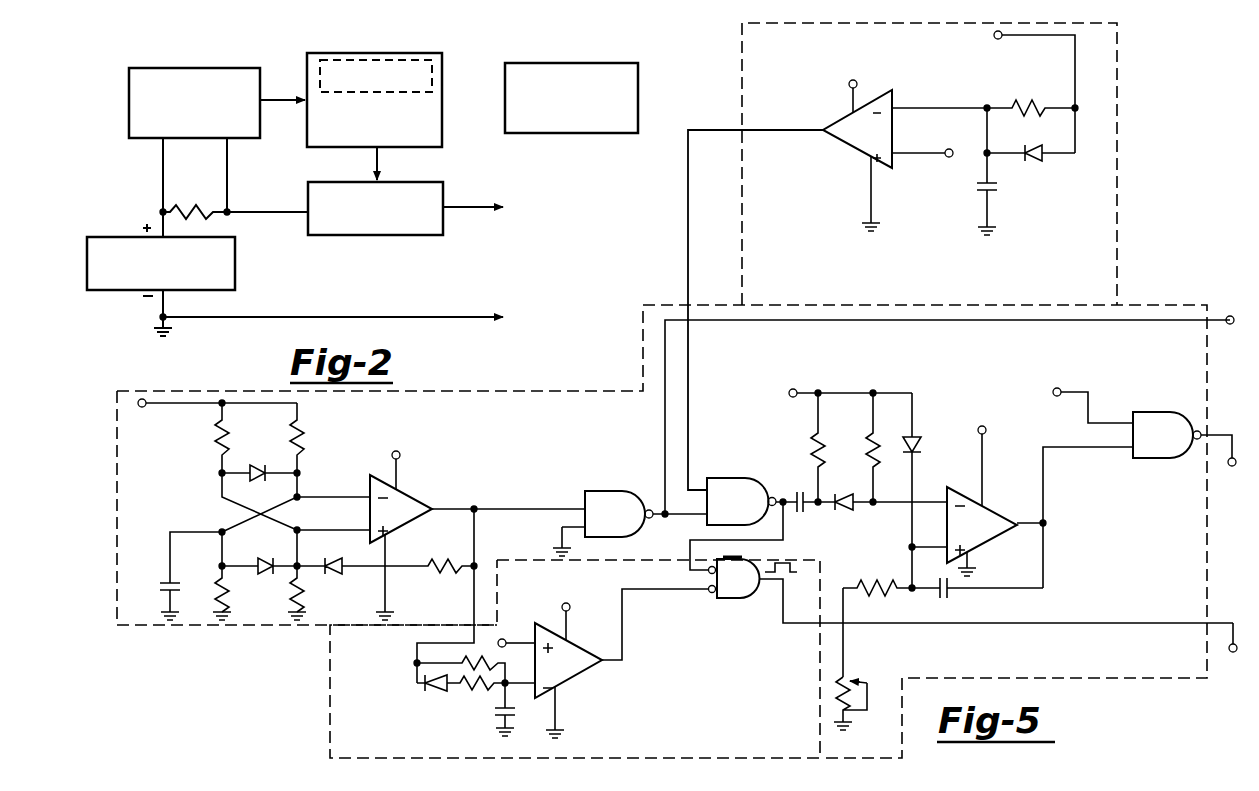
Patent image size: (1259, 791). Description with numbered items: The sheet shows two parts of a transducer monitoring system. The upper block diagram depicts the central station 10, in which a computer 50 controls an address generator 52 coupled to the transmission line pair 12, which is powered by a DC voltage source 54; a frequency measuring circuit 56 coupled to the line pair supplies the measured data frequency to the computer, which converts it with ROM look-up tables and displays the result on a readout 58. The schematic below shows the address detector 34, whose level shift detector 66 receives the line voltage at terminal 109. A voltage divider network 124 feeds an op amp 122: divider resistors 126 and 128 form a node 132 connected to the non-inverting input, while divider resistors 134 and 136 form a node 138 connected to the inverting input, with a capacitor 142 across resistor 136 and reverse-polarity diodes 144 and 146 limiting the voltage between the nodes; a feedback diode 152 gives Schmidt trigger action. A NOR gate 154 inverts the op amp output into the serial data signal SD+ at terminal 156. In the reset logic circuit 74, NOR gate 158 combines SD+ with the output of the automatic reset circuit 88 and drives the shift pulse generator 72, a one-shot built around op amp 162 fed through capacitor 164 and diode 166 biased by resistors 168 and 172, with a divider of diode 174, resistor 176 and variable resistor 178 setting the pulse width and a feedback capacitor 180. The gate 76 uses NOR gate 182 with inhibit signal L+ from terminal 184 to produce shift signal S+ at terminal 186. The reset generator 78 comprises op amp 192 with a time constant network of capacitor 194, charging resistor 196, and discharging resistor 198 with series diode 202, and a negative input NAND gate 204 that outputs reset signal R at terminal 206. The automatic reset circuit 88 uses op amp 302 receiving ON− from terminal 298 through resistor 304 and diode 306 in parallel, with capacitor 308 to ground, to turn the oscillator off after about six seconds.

In FIG. 2, the central station 10 is at (150, 175).
In FIG. 2, the transmission line pair 12 is at (470, 207).
In FIG. 2, the computer 50 is at (444, 137).
In FIG. 2, the address generator 52 is at (352, 236).
In FIG. 2, the DC voltage source 54 is at (235, 275).
In FIG. 2, the frequency measuring circuit 56 is at (246, 68).
In FIG. 2, the readout 58 is at (582, 133).
In FIG. 5, the address detector 34 is at (567, 353).
In FIG. 5, the level shift detector 66 is at (530, 460).
In FIG. 5, the shift pulse generator 72 is at (890, 380).
In FIG. 5, the reset logic circuit 74 is at (717, 465).
In FIG. 5, the gate 76 is at (1142, 403).
In FIG. 5, the reset generator 78 is at (322, 680).
In FIG. 5, the automatic reset circuit 88 is at (740, 72).
In FIG. 5, the terminal 109 is at (145, 400).
In FIG. 5, the operational amplifier 122 is at (418, 495).
In FIG. 5, the voltage divider network 124 is at (213, 508).
In FIG. 5, the divider resistor 126 is at (232, 440).
In FIG. 5, the divider resistor 128 is at (304, 590).
In FIG. 5, the node 132 is at (300, 528).
In FIG. 5, the divider resistor 134 is at (300, 437).
In FIG. 5, the divider resistor 136 is at (222, 605).
In FIG. 5, the node 138 is at (300, 495).
In FIG. 5, the capacitor 142 is at (163, 578).
In FIG. 5, the diode 144 is at (283, 443).
In FIG. 5, the diode 146 is at (265, 573).
In FIG. 5, the diode 152 is at (342, 540).
In FIG. 5, the NOR gate 154 is at (638, 447).
In FIG. 5, the terminal 156 is at (1228, 316).
In FIG. 5, the NOR gate 158 is at (730, 477).
In FIG. 5, the operational amplifier 162 is at (1032, 465).
In FIG. 5, the capacitor 164 is at (807, 513).
In FIG. 5, the diode 166 is at (848, 514).
In FIG. 5, the resistor 168 is at (867, 446).
In FIG. 5, the resistor 172 is at (814, 445).
In FIG. 5, the diode 174 is at (920, 445).
In FIG. 5, the resistor 176 is at (870, 597).
In FIG. 5, the variable resistor 178 is at (850, 676).
In FIG. 5, the feedback capacitor 180 is at (950, 595).
In FIG. 5, the NOR gate 182 is at (1198, 380).
In FIG. 5, the terminal 184 is at (1085, 348).
In FIG. 5, the terminal 186 is at (1228, 463).
In FIG. 5, the operational amplifier 192 is at (583, 677).
In FIG. 5, the capacitor 194 is at (498, 700).
In FIG. 5, the resistor 196 is at (468, 646).
In FIG. 5, the resistor 198 is at (467, 690).
In FIG. 5, the diode 202 is at (430, 693).
In FIG. 5, the negative input NAND gate 204 is at (728, 602).
In FIG. 5, the terminal 206 is at (1229, 648).
In FIG. 5, the terminal 298 is at (998, 40).
In FIG. 5, the operational amplifier 302 is at (858, 153).
In FIG. 5, the resistor 304 is at (1045, 94).
In FIG. 5, the diode 306 is at (1033, 162).
In FIG. 5, the capacitor 308 is at (975, 186).